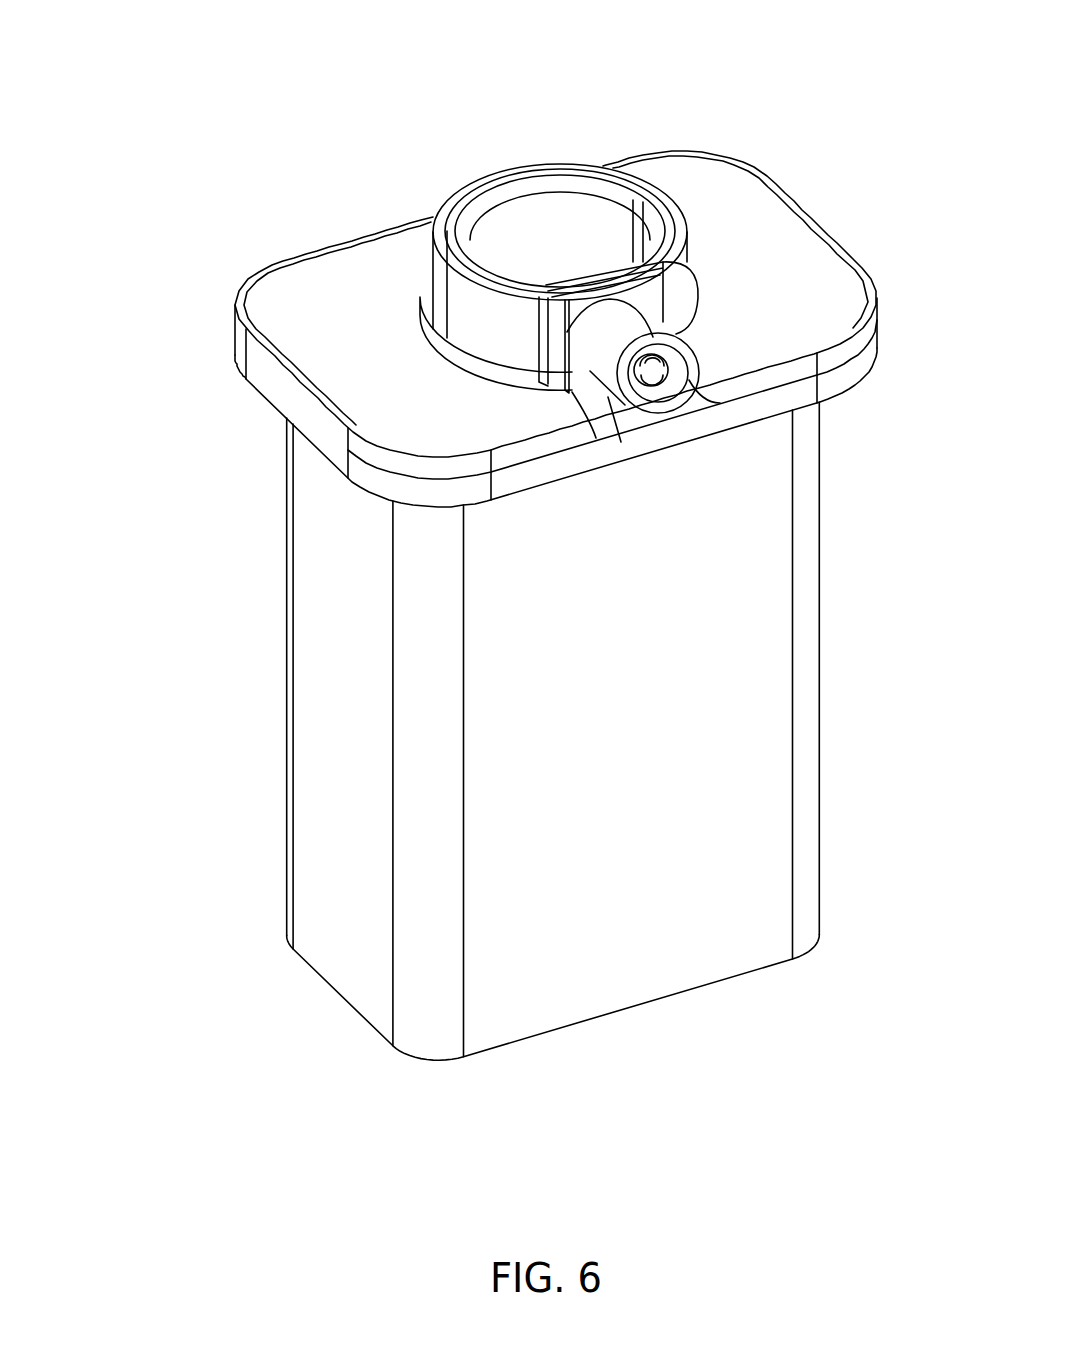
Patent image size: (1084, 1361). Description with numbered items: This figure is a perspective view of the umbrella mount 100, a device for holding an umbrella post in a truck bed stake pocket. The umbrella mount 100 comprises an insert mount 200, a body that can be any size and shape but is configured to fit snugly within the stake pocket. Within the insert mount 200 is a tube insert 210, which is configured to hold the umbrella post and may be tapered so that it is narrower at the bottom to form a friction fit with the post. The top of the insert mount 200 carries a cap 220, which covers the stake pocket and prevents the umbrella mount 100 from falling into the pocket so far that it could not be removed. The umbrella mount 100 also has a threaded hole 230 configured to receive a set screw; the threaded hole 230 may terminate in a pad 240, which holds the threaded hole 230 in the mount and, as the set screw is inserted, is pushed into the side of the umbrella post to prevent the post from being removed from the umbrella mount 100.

The umbrella mount 100 is at (500, 541).
The insert mount 200 is at (752, 718).
The tube insert 210 is at (512, 230).
The cap 220 is at (758, 263).
The threaded hole 230 is at (670, 380).
The pad 240 is at (602, 278).